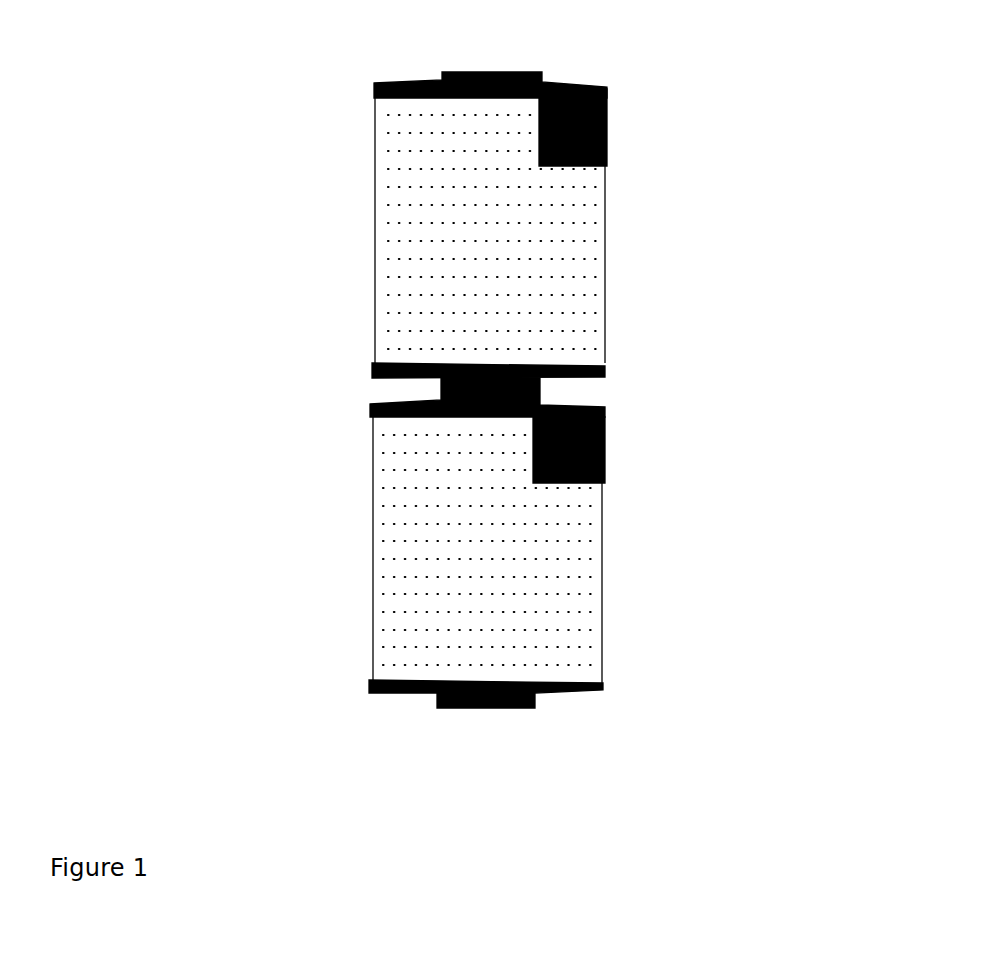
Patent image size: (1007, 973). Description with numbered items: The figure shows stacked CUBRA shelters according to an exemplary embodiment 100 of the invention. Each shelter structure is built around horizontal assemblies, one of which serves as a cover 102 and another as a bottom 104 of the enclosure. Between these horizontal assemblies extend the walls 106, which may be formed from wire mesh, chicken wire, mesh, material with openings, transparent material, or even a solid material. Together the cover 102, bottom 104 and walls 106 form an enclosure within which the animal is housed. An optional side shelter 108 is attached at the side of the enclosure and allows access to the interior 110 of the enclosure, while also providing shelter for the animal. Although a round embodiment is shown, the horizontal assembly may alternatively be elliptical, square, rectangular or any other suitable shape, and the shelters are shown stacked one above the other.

The embodiment 100 is at (549, 357).
The cover 102 is at (374, 86).
The bottom 104 is at (608, 364).
The walls 106 is at (389, 223).
The side shelter 108 is at (609, 90).
The interior 110 is at (498, 302).